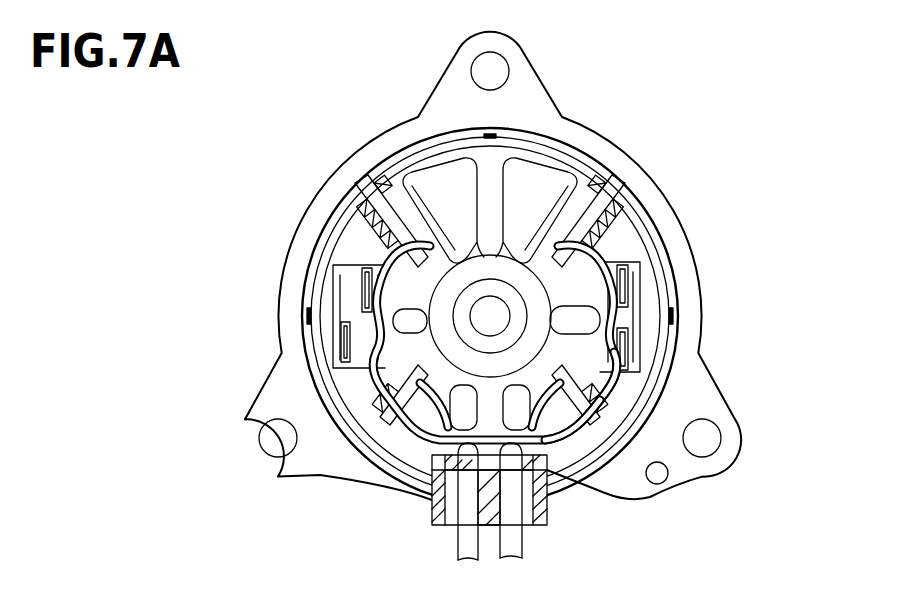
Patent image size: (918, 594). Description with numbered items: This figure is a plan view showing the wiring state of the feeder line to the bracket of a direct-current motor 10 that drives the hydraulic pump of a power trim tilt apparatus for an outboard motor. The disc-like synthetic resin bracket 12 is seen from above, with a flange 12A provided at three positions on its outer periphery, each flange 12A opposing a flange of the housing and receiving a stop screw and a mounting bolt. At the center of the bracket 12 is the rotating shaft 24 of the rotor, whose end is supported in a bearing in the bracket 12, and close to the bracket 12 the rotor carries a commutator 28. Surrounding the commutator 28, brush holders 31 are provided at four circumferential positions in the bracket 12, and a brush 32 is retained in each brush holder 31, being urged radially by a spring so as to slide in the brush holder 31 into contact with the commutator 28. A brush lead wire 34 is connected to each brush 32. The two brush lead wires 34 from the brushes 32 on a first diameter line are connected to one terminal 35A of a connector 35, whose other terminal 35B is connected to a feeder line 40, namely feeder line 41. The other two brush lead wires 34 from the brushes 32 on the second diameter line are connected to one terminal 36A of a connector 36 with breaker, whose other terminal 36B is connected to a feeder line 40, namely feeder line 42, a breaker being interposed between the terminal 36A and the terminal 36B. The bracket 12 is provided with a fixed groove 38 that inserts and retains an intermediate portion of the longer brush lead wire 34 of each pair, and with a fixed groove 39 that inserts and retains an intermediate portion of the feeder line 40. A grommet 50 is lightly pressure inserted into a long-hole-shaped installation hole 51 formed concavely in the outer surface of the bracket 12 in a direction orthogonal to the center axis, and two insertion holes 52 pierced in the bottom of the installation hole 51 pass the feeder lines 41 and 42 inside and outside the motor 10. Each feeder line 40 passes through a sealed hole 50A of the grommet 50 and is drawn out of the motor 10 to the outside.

The direct-current motor 10 is at (313, 166).
The bracket 12 is at (300, 219).
The flange 12A is at (242, 416).
The rotating shaft 24 is at (432, 207).
The commutator 28 is at (488, 306).
The brush holder 31 is at (567, 208).
The brush 32 is at (543, 240).
The brush lead wire 34 is at (605, 258).
The connector 35 is at (637, 270).
The terminal 35A is at (630, 288).
The terminal 35B is at (625, 352).
The connector with breaker 36 is at (350, 304).
The terminal 36A is at (366, 290).
The terminal 36B is at (343, 343).
The fixed groove 38 is at (617, 382).
The fixed groove 39 is at (637, 393).
The feeder line 40 is at (477, 515).
The feeder line 41 is at (467, 550).
The feeder line 42 is at (512, 552).
The grommet 50 is at (430, 478).
The sealed hole 50A is at (447, 507).
The installation hole 51 is at (528, 524).
The insertion hole 52 is at (540, 478).